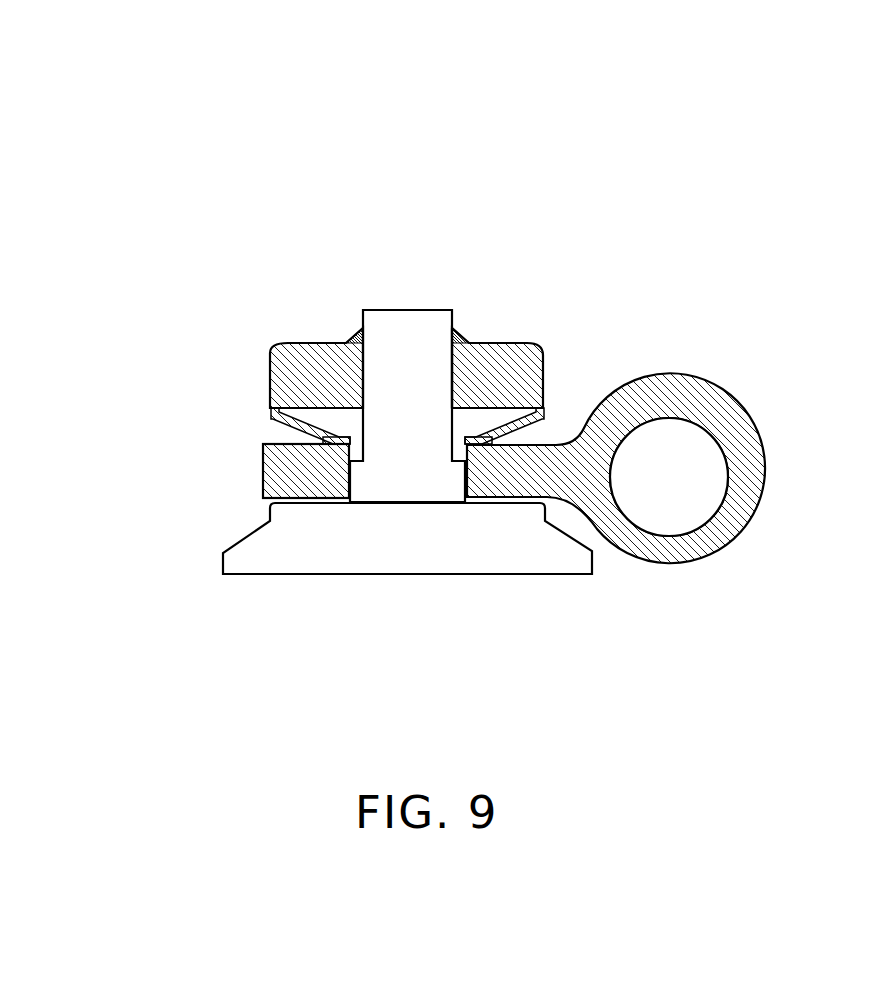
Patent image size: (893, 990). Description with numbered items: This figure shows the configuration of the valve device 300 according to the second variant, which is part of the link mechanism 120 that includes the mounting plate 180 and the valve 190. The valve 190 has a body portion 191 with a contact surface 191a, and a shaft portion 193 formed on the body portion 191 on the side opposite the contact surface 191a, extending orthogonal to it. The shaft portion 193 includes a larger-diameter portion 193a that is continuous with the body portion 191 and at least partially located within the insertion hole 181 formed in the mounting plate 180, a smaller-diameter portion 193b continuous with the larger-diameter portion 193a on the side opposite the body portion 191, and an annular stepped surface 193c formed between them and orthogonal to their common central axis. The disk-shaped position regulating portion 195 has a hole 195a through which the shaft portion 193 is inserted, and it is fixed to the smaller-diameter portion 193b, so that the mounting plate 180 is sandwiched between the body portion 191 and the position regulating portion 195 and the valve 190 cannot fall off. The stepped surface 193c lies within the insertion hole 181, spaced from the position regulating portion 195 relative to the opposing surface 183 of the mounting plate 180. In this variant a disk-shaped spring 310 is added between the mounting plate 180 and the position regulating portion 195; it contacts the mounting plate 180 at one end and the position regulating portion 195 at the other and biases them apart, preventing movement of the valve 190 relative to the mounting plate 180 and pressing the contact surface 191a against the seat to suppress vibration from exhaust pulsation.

The valve device 300 is at (128, 107).
The link mechanism 120 is at (193, 190).
The valve 190 is at (372, 287).
The shaft portion 193 is at (430, 490).
The larger-diameter portion 193a is at (616, 450).
The smaller-diameter portion 193b is at (452, 368).
The stepped surface 193c is at (657, 413).
The position regulating portion 195 is at (270, 380).
The hole 195a is at (363, 384).
The spring 310 is at (298, 437).
The opposing surface 183 is at (305, 438).
The mounting plate 180 is at (263, 470).
The insertion hole 181 is at (348, 486).
The body portion 191 is at (227, 545).
The contact surface 191a is at (267, 575).